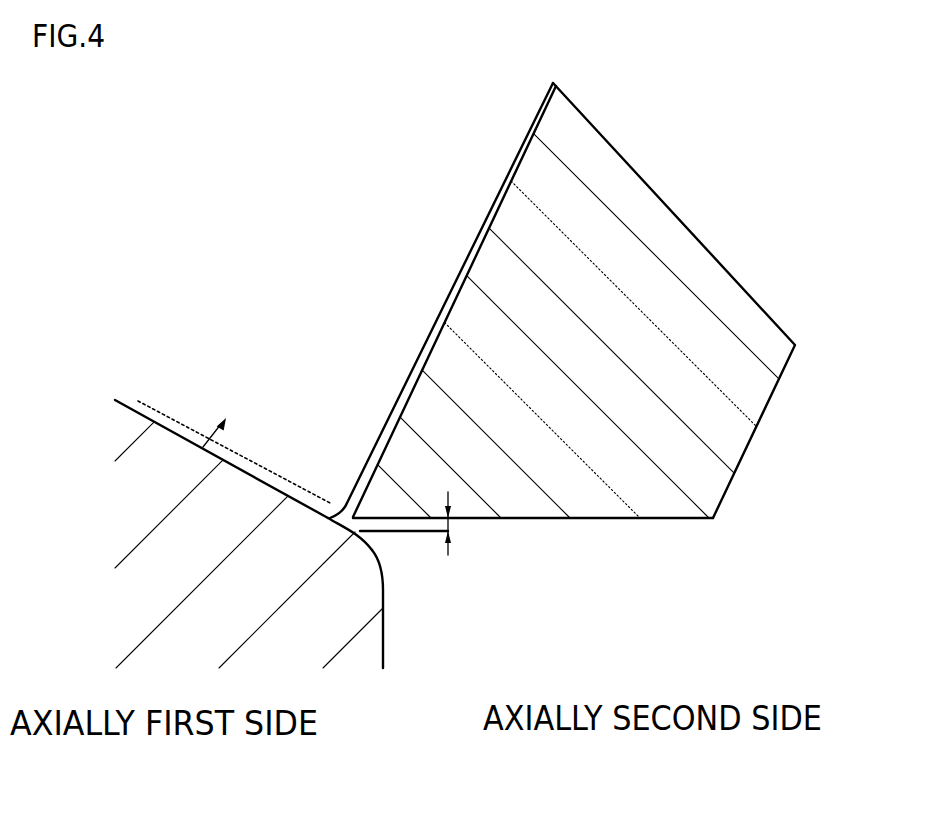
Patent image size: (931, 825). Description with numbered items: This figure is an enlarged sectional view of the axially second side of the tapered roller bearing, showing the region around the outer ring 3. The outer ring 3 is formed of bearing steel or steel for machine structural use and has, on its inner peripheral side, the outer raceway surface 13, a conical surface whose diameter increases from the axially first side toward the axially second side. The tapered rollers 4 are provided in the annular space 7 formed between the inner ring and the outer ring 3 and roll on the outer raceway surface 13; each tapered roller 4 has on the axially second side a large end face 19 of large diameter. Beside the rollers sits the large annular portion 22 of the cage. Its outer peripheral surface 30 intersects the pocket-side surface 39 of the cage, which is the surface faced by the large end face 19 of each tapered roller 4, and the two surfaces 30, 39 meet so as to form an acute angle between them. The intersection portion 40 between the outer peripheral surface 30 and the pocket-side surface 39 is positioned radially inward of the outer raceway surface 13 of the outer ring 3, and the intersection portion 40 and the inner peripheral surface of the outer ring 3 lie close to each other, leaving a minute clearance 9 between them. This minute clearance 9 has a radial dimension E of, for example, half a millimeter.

The outer ring 3 is at (330, 615).
The tapered rollers 4 is at (263, 447).
The annular space 7 is at (198, 451).
The minute clearance 9 is at (374, 537).
The outer raceway surface 13 is at (178, 430).
The large end face 19 is at (404, 402).
The large annular portion 22 is at (613, 452).
The outer peripheral surface 30 is at (527, 519).
The pocket-side surface 39 is at (381, 439).
The intersection portion 40 is at (350, 513).
The radial dimension E is at (450, 523).